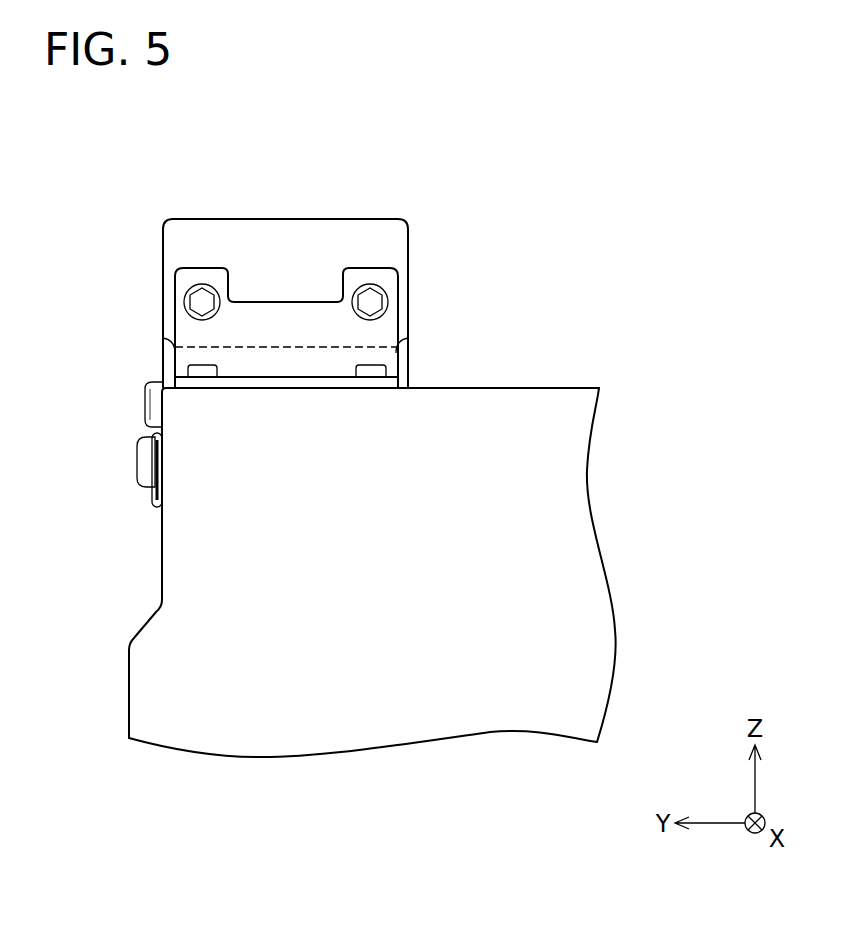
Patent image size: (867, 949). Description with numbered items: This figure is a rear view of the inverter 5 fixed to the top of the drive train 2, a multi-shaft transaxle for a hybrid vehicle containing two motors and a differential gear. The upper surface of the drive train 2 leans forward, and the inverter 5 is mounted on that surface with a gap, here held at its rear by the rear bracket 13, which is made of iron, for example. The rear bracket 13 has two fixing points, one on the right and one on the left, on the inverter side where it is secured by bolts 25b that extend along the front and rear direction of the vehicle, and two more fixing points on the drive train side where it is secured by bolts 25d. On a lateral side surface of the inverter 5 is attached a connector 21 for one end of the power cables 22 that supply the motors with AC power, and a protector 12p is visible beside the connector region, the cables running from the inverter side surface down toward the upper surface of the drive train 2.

The drive train 2 is at (587, 613).
The inverter 5 is at (370, 228).
The rear bracket 13 is at (385, 328).
The bolts 25b is at (367, 297).
The bolts 25d is at (167, 362).
The connector 21 is at (155, 403).
The protector 12p is at (148, 457).
The power cables 22 is at (152, 492).